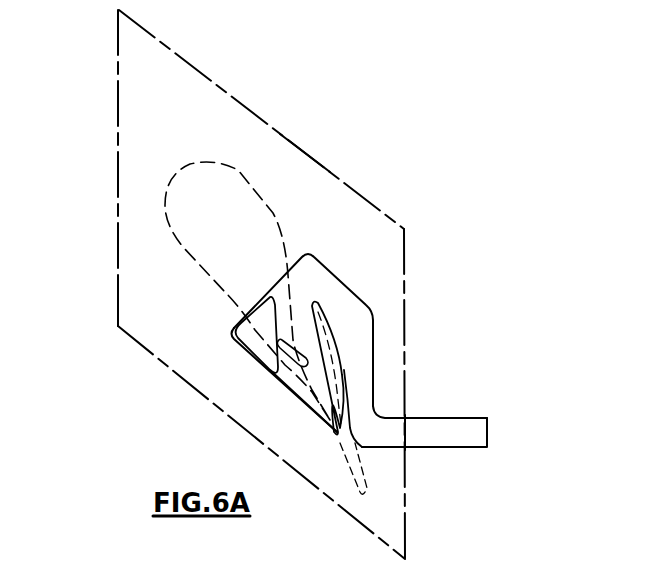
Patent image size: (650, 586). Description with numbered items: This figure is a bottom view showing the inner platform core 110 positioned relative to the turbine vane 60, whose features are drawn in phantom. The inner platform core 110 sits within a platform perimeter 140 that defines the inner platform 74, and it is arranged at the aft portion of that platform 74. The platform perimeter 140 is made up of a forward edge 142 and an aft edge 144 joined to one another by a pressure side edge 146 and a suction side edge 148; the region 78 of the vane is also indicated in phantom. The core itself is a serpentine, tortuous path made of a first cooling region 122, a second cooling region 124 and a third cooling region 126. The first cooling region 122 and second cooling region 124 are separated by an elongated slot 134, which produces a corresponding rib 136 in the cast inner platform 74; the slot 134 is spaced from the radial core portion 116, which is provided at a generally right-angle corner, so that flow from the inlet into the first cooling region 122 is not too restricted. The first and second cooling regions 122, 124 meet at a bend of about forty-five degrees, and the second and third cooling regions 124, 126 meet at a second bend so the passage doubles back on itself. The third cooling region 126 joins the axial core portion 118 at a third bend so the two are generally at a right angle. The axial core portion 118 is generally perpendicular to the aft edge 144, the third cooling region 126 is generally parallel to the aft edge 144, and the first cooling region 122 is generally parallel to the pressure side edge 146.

The turbine vane 60 is at (263, 284).
The inner platform 74 is at (109, 302).
The aperture 78 is at (299, 224).
The inner platform core 110 is at (374, 262).
The radial core portion 116 is at (247, 343).
The axial core portion 118 is at (456, 440).
The first cooling region 122 is at (290, 397).
The second cooling region 124 is at (313, 302).
The third cooling region 126 is at (391, 369).
The elongated slot 134 is at (293, 369).
The rib 136 is at (267, 247).
The platform perimeter 140 is at (237, 77).
The forward edge 142 is at (116, 217).
The aft edge 144 is at (406, 272).
The pressure side edge 146 is at (190, 387).
The suction side edge 148 is at (308, 151).